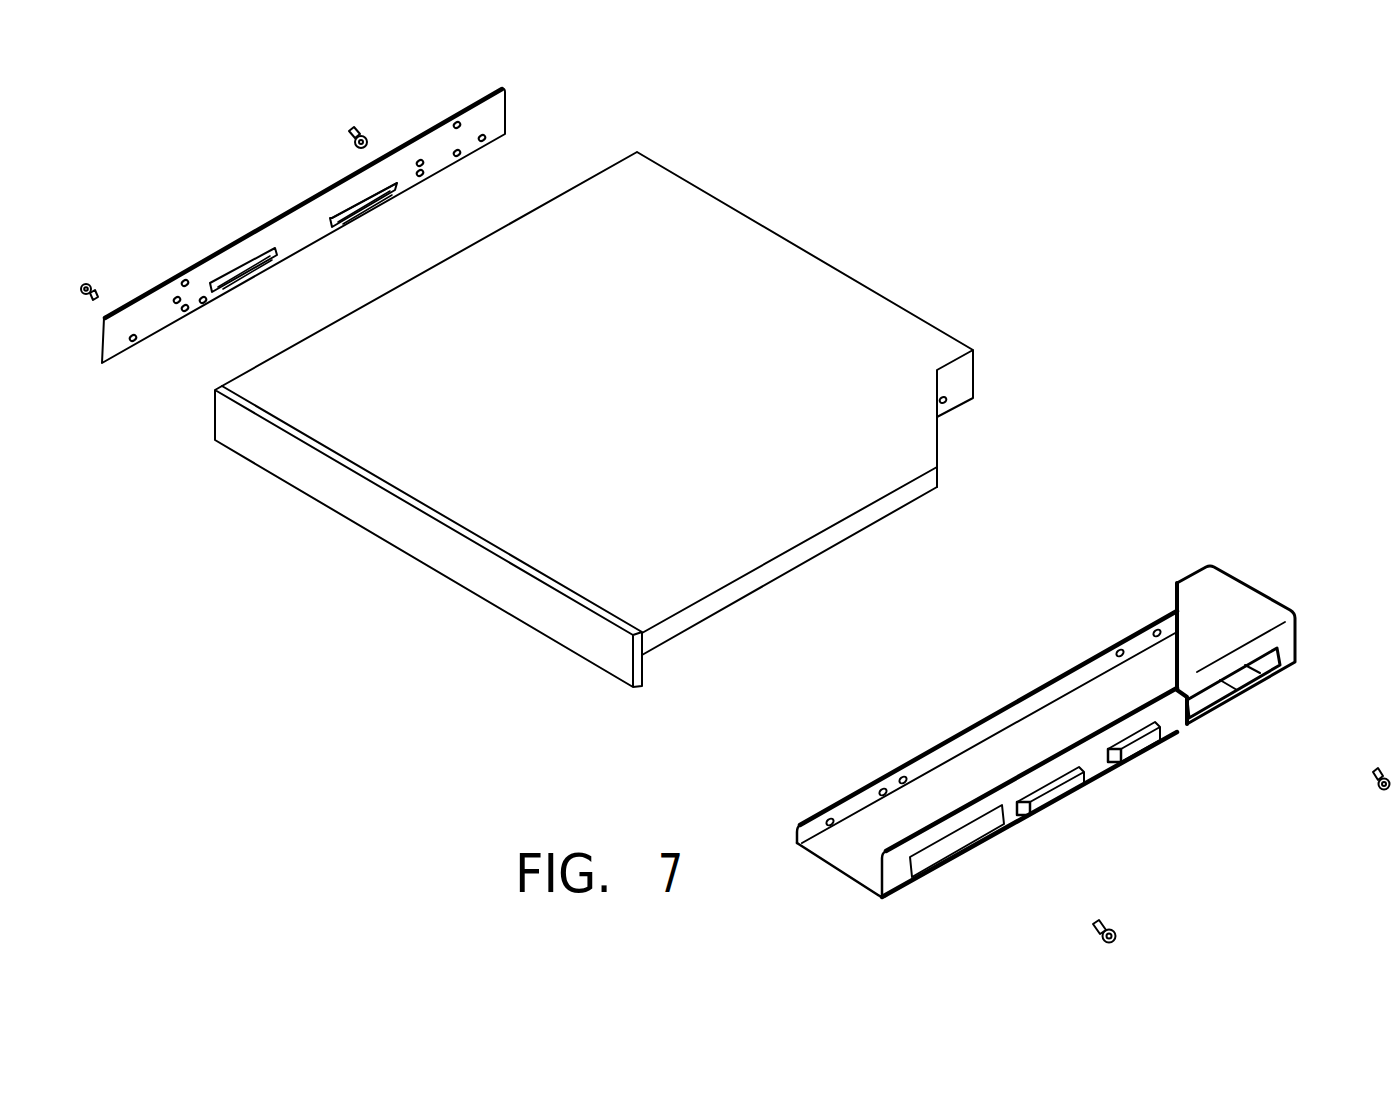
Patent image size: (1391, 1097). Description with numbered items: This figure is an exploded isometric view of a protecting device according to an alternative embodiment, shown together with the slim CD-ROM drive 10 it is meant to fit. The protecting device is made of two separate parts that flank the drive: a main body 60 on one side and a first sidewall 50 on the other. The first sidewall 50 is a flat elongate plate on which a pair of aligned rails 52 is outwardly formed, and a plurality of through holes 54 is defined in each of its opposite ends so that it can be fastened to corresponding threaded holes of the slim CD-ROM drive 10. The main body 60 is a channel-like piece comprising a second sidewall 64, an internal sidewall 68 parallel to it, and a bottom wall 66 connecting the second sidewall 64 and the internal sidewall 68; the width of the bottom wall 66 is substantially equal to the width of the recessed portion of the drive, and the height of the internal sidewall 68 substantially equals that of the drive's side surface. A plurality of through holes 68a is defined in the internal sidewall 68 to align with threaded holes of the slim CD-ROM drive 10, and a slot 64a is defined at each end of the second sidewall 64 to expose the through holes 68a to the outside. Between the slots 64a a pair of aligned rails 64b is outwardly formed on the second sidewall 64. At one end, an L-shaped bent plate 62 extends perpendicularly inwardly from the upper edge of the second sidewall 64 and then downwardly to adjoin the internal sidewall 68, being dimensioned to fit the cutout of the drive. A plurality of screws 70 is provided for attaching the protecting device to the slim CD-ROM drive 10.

The slim CD-ROM drive 10 is at (838, 302).
The first sidewall 50 is at (303, 226).
The rails 52 is at (243, 272).
The through holes 54 is at (202, 296).
The screws 70 is at (364, 131).
The main body 60 is at (1084, 721).
The bent plate 62 is at (1248, 628).
The second sidewall 64 is at (1048, 808).
The slot 64a is at (968, 835).
The rails 64b is at (1150, 738).
The bottom wall 66 is at (1018, 740).
The internal sidewall 68 is at (987, 713).
The through holes 68a is at (1117, 646).